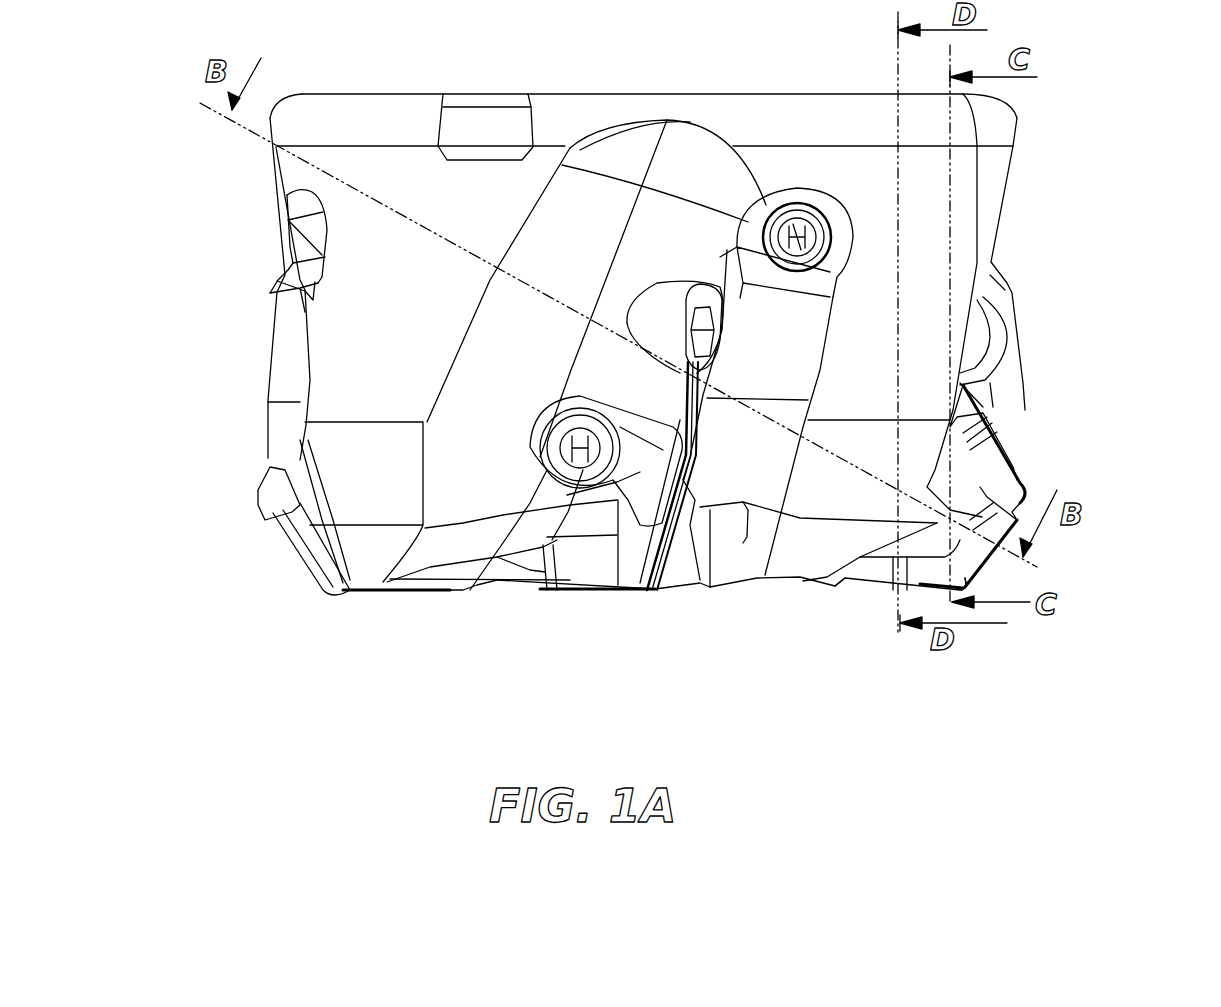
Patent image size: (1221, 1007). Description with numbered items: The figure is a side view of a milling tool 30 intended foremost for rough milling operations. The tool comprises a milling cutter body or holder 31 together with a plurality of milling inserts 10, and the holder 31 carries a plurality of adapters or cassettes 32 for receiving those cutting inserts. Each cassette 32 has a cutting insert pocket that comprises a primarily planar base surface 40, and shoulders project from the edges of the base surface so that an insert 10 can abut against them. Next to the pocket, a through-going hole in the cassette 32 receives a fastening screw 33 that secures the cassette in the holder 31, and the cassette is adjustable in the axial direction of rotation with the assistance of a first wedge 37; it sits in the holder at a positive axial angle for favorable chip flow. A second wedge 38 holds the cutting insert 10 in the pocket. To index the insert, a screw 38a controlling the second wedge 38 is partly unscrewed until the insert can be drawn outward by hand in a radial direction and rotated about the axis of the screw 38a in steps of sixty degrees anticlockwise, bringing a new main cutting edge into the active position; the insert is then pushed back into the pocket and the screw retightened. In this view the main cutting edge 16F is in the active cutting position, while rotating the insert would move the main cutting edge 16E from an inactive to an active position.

The milling insert 10 is at (283, 530).
The main cutting edge 16E is at (875, 595).
The main cutting edge 16F is at (970, 560).
The milling tool 30 is at (646, 342).
The milling cutter body or holder 31 is at (624, 112).
The cassette 32 is at (283, 353).
The fastening screw 33 is at (697, 284).
The first wedge 37 is at (813, 203).
The second wedge 38 is at (628, 470).
The screw 38a is at (537, 470).
The base surface 40 is at (718, 540).